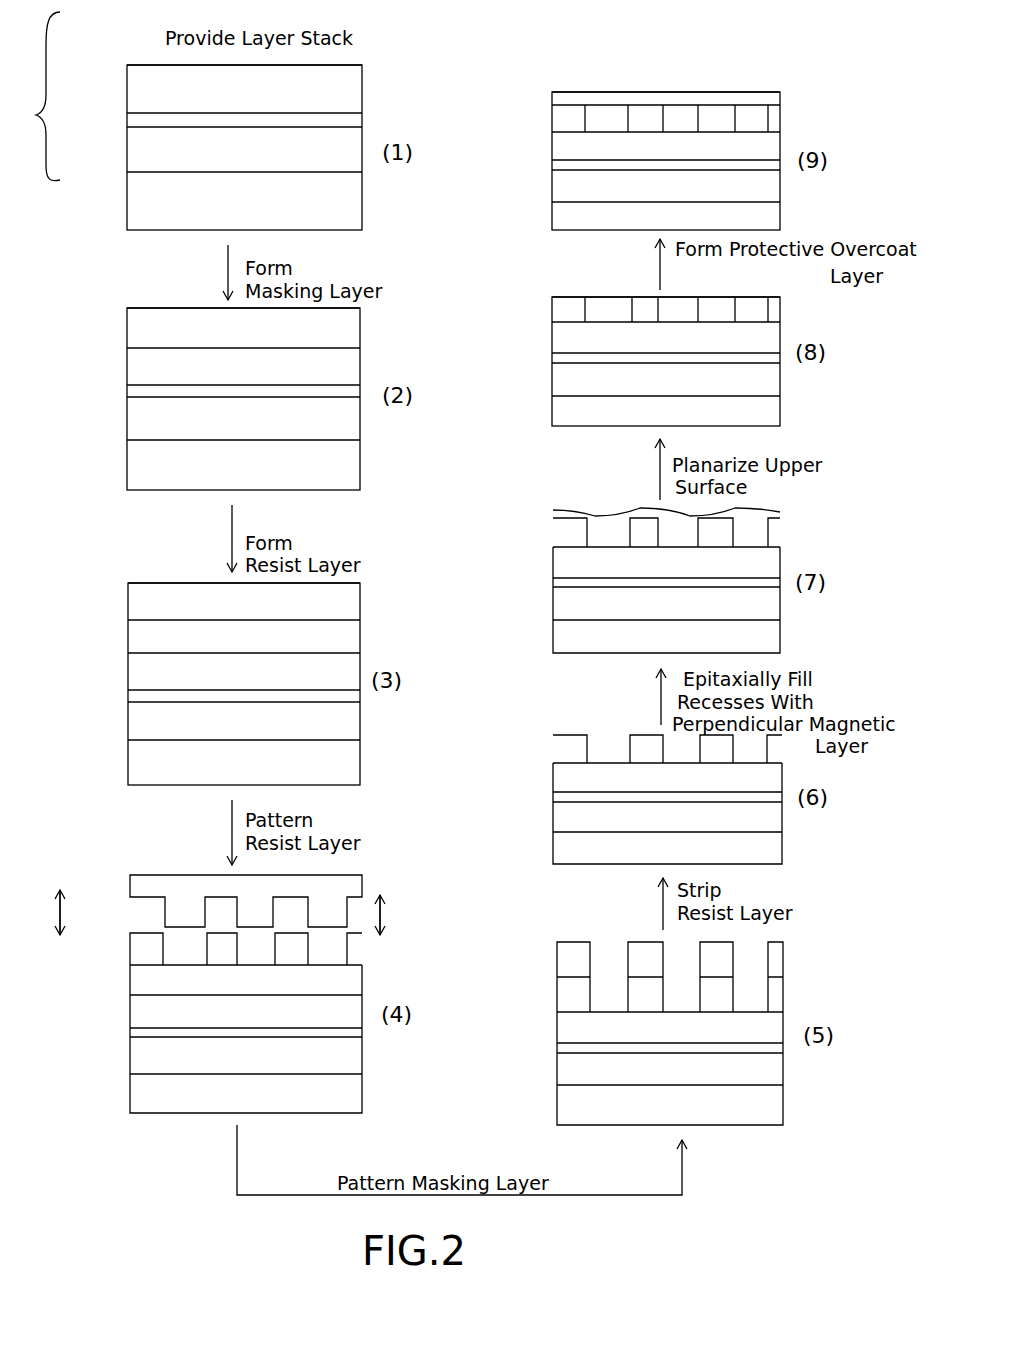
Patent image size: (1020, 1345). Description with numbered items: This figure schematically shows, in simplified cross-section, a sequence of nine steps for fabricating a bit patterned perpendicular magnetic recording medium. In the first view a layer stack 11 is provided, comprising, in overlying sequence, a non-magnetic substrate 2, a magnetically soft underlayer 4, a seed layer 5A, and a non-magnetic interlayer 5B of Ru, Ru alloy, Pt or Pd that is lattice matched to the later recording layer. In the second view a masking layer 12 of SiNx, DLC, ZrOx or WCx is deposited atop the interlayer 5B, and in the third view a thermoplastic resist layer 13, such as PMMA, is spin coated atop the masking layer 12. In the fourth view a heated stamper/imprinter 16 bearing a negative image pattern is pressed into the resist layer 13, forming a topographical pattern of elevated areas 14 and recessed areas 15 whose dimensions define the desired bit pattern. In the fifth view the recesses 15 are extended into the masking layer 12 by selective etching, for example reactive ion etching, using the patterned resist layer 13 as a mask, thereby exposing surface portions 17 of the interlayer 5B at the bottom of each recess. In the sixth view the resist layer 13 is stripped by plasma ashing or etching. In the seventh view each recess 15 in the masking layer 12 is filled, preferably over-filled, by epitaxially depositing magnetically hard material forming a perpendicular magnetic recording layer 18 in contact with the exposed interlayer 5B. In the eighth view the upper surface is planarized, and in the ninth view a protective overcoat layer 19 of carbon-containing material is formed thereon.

The layer stack 11 is at (38, 96).
The non-magnetic substrate 2 is at (124, 202).
The magnetically soft underlayer 4 is at (124, 155).
The seed layer 5A is at (122, 118).
The non-magnetic interlayer 5B is at (124, 88).
The masking layer 12 is at (121, 336).
The resist layer 13 is at (122, 606).
The elevated areas 14 is at (150, 926).
The recessed areas 15 is at (336, 944).
The stamper/imprinter 16 is at (125, 894).
The exposed surface portions of interlayer 17 is at (681, 1003).
The perpendicular magnetic recording layer 18 is at (597, 506).
The protective overcoat layer 19 is at (548, 96).